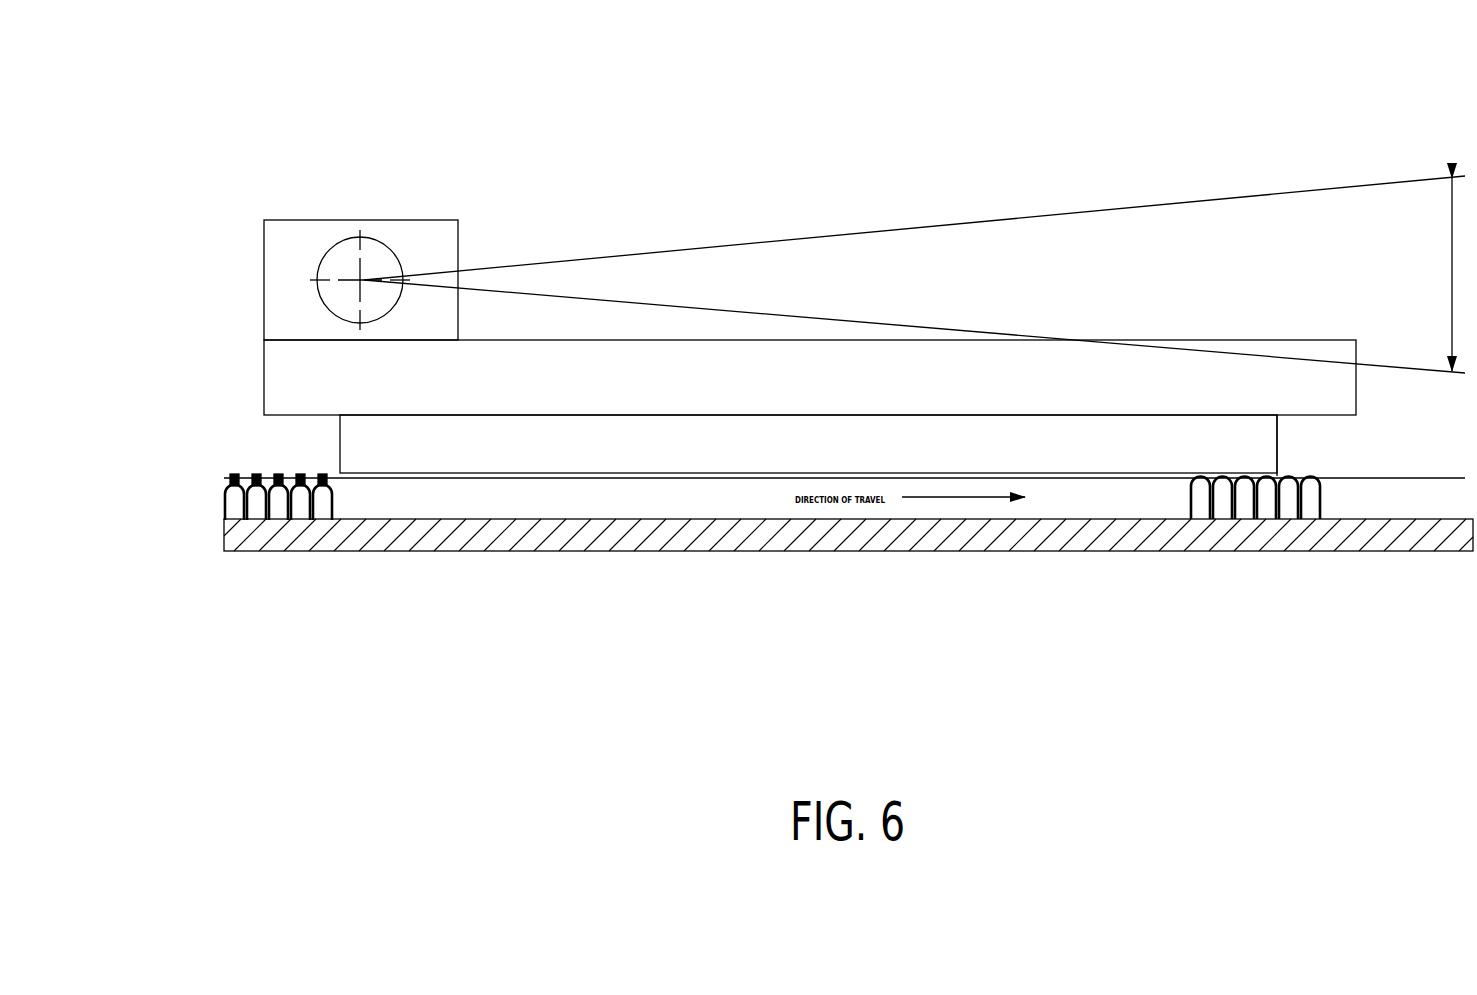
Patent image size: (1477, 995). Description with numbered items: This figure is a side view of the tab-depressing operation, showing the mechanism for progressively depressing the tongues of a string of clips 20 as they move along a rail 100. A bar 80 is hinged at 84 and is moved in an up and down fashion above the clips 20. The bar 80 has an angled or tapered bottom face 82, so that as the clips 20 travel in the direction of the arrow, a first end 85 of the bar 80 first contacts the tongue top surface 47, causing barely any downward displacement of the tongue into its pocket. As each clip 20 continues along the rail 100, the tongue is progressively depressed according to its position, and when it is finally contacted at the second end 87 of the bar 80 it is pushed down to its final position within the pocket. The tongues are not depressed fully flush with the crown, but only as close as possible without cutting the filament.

The hinge 84 is at (372, 270).
The bar 80 is at (815, 384).
The first end 85 is at (717, 382).
The second end 87 is at (1357, 440).
The tapered bottom face 82 is at (1138, 478).
The clips 20 is at (341, 509).
The top surface 47 is at (252, 471).
The rail 100 is at (848, 625).